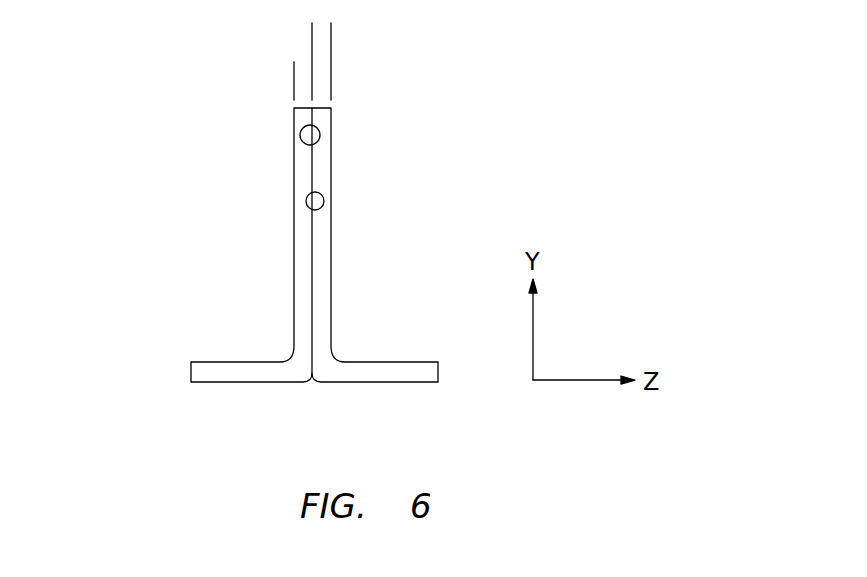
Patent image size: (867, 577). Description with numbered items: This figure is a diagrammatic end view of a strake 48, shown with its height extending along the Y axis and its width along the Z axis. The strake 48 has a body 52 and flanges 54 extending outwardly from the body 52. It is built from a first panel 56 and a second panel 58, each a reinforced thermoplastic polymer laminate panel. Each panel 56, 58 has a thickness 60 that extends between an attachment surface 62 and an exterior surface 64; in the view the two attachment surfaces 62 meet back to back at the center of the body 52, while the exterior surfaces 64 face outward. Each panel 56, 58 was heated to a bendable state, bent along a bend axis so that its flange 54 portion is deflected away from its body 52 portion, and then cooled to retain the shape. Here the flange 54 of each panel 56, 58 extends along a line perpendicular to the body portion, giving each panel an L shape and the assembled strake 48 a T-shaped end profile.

The strake 48 is at (143, 190).
The body 52 is at (298, 160).
The flange 54 is at (210, 372).
The first panel 56 is at (333, 303).
The second panel 58 is at (290, 295).
The thickness 60 is at (312, 80).
The attachment surface 62 is at (314, 144).
The exterior surface 64 is at (331, 250).